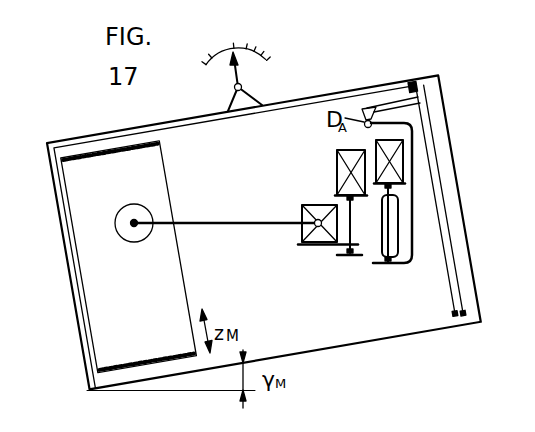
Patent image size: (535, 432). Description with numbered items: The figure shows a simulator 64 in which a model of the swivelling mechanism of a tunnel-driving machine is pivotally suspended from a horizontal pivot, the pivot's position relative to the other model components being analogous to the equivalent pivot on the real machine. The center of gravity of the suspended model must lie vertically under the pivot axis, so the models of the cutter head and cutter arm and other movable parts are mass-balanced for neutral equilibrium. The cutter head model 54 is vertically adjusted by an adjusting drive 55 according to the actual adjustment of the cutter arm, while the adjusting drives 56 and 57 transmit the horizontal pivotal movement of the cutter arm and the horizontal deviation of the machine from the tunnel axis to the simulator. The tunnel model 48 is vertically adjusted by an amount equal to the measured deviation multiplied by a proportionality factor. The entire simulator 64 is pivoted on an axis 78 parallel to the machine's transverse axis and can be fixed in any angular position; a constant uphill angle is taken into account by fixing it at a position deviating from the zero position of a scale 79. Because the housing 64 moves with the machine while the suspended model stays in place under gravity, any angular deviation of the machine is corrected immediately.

The tunnel model 48 is at (123, 365).
The cutter head model 54 is at (123, 212).
The adjusting drive 55 is at (302, 214).
The adjusting drive 56 is at (337, 164).
The adjusting drive 57 is at (404, 155).
The simulator 64 is at (71, 297).
The axis 78 is at (234, 87).
The scale 79 is at (244, 51).